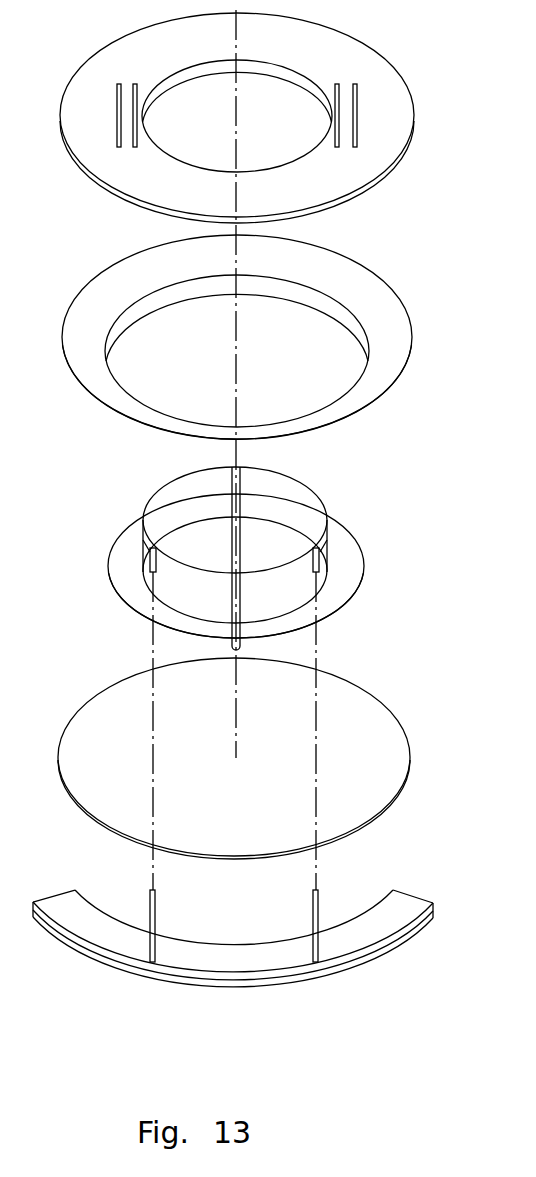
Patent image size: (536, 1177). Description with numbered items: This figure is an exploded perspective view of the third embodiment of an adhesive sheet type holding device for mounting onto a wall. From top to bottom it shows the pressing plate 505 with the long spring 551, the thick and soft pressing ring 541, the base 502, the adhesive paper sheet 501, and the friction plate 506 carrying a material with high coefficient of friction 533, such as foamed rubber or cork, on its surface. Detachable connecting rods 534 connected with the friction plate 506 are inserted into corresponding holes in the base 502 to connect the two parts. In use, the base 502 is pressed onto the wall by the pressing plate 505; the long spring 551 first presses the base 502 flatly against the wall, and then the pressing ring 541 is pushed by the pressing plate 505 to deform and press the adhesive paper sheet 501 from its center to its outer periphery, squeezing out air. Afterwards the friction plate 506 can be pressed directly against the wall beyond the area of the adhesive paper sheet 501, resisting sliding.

The pressing plate 505 is at (318, 50).
The long spring 551 is at (344, 105).
The pressing ring 541 is at (392, 308).
The base 502 is at (353, 537).
The adhesive paper sheet 501 is at (402, 829).
The material with high coefficient of friction 533 is at (60, 940).
The friction plate 506 is at (63, 900).
The connecting rods 534 is at (147, 912).